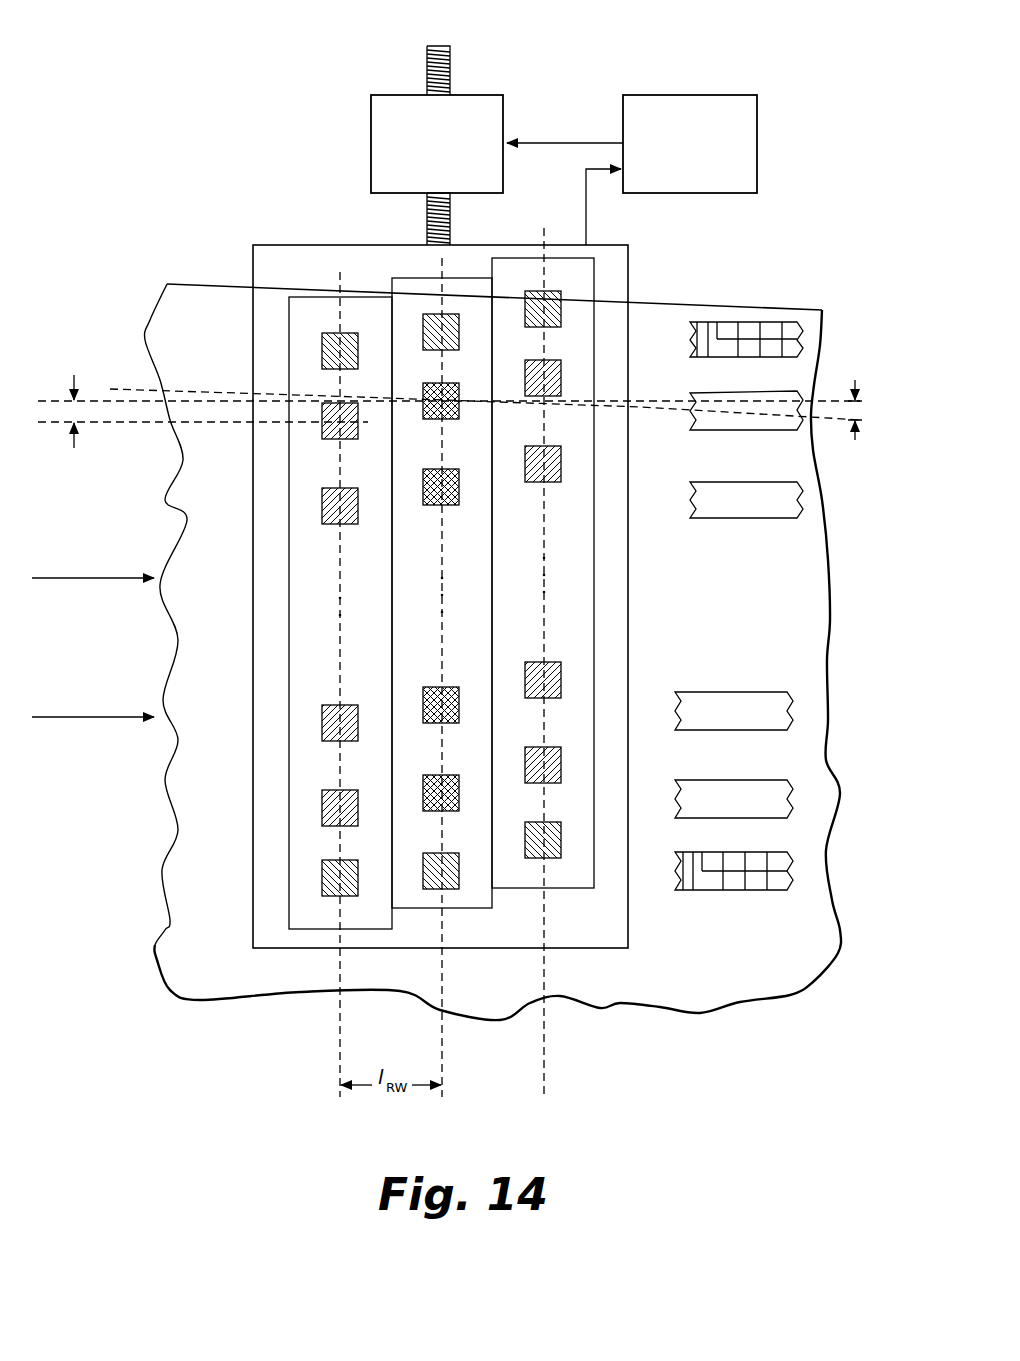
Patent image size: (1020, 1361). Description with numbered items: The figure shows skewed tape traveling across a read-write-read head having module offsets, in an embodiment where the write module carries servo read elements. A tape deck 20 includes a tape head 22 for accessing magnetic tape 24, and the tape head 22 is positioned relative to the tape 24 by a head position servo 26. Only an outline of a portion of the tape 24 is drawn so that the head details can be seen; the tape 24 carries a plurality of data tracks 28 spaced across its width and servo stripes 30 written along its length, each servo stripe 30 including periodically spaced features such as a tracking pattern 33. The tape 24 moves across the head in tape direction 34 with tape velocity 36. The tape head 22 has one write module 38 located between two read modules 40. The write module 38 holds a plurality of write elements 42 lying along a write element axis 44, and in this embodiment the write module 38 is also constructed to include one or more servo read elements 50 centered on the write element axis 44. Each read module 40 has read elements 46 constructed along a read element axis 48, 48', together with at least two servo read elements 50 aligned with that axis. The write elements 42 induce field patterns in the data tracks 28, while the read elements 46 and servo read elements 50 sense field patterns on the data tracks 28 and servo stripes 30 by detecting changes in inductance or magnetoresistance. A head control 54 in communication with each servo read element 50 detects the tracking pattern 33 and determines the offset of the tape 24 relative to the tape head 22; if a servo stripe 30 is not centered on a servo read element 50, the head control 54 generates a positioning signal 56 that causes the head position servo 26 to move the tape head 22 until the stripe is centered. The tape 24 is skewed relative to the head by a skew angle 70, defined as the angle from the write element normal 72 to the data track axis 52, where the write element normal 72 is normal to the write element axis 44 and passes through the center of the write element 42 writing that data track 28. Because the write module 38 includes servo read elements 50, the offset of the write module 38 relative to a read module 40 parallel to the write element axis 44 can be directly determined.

The tape deck 20 is at (150, 135).
The tape head 22 is at (302, 245).
The magnetic tape 24 is at (826, 330).
The head position servo 26 is at (477, 94).
The data track 28 is at (750, 431).
The servo stripe 30 is at (751, 359).
The tracking pattern 33 is at (729, 311).
The tape direction 34 is at (98, 580).
The tape velocity 36 is at (98, 719).
The write module 38 is at (423, 909).
The read module 40 is at (317, 930).
The write element 42 is at (437, 420).
The write element axis 44 is at (442, 1042).
The read element 46 is at (338, 439).
The read element axis 48 is at (307, 684).
The read element axis 48' is at (584, 662).
The servo read element 50 is at (338, 333).
The data track axis 52 is at (135, 403).
The head control 54 is at (706, 94).
The positioning signal 56 is at (545, 140).
The skew angle 70 is at (853, 410).
The write element normal 72 is at (135, 403).